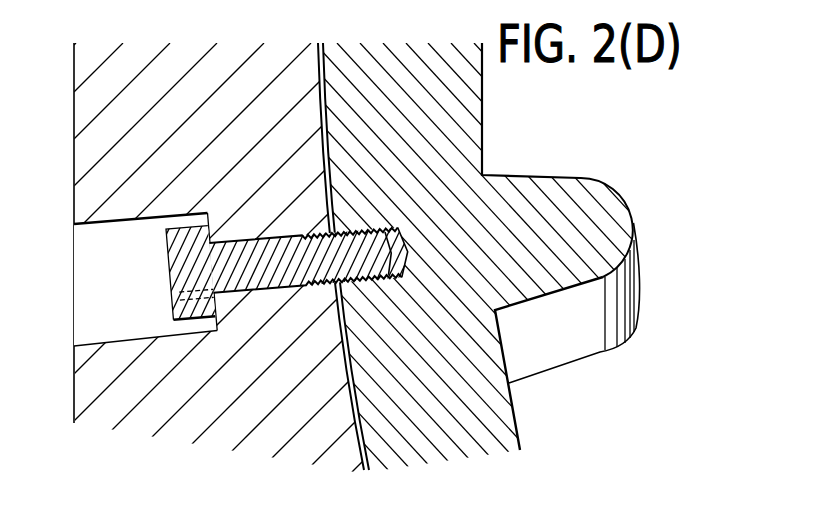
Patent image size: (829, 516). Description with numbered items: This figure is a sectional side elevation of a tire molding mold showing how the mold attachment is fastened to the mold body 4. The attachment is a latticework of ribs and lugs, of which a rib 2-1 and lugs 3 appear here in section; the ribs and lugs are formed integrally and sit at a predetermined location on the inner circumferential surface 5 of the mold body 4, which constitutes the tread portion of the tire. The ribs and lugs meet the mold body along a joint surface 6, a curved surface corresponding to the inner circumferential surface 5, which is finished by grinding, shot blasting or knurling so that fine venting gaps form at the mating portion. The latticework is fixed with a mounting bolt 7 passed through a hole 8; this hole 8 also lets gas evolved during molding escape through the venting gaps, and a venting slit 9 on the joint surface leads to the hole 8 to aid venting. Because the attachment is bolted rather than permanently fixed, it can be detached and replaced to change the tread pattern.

The rib 2-1 is at (602, 181).
The lug 3 is at (482, 113).
The mold body 4 is at (88, 163).
The inner circumferential surface of the mold body 5 is at (362, 437).
The joint surface 6 is at (343, 371).
The mounting bolt 7 is at (170, 267).
The hole 8 is at (236, 241).
The venting slit 9 is at (326, 147).